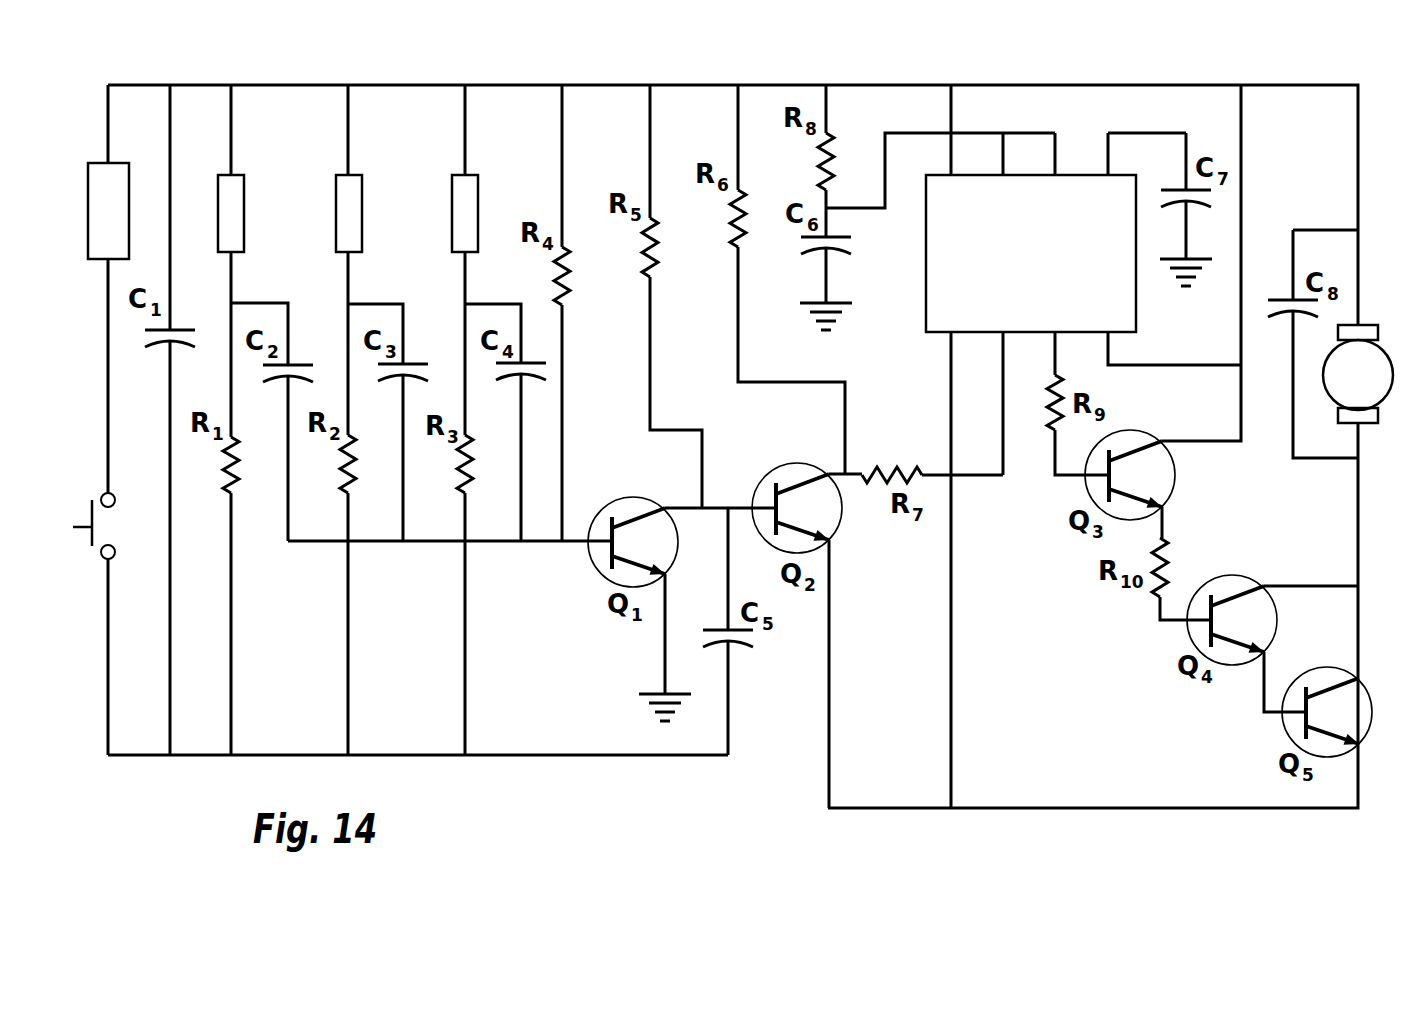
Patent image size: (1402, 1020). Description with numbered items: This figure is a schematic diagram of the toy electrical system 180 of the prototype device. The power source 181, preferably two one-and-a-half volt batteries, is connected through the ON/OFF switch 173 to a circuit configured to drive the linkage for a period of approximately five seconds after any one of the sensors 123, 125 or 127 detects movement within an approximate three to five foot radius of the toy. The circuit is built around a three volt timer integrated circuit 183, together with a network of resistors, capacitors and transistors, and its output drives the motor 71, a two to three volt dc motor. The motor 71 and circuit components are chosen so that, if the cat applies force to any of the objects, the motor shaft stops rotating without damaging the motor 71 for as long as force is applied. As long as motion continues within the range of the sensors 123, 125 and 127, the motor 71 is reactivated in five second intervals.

The toy electrical system 180 is at (733, 770).
The power source 181 is at (118, 172).
The ON/OFF switch 173 is at (97, 518).
The sensor 123 is at (238, 182).
The sensor 125 is at (352, 182).
The sensor 127 is at (468, 182).
The integrated circuit 183 is at (926, 332).
The motor 71 is at (1341, 392).